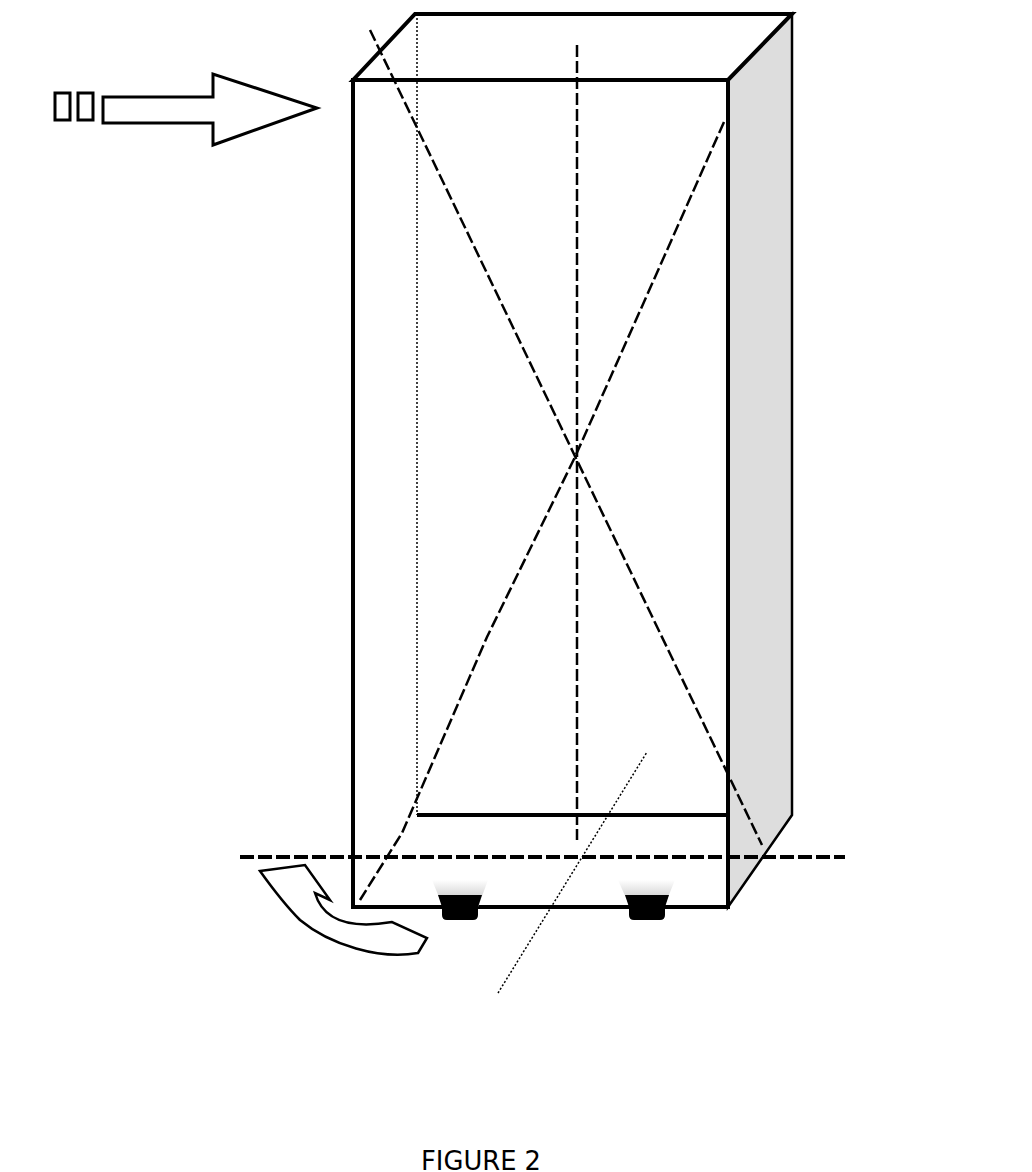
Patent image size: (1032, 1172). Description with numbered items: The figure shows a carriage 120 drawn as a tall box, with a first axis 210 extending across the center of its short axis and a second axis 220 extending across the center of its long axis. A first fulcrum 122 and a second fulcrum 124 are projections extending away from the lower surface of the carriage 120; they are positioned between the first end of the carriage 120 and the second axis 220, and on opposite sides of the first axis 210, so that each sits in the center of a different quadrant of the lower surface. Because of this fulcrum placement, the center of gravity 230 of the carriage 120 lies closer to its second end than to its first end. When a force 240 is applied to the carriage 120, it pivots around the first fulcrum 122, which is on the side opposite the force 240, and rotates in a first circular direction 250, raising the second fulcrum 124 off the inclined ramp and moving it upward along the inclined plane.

The carriage 120 is at (300, 407).
The first fulcrum 122 is at (692, 958).
The second fulcrum 124 is at (470, 918).
The first axis 210 is at (572, 879).
The second axis 220 is at (556, 839).
The center of gravity 230 is at (665, 450).
The force 240 is at (210, 104).
The first circular direction 250 is at (343, 910).